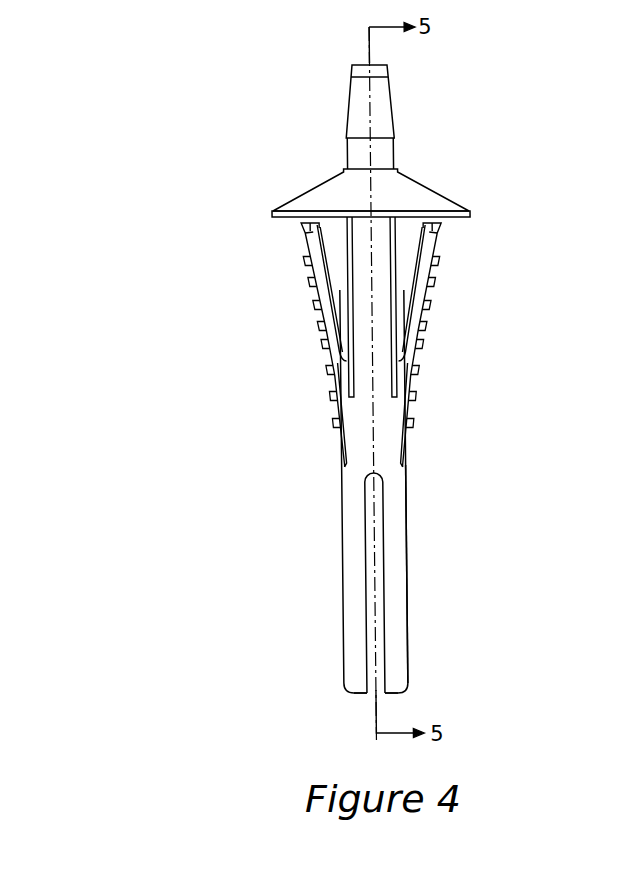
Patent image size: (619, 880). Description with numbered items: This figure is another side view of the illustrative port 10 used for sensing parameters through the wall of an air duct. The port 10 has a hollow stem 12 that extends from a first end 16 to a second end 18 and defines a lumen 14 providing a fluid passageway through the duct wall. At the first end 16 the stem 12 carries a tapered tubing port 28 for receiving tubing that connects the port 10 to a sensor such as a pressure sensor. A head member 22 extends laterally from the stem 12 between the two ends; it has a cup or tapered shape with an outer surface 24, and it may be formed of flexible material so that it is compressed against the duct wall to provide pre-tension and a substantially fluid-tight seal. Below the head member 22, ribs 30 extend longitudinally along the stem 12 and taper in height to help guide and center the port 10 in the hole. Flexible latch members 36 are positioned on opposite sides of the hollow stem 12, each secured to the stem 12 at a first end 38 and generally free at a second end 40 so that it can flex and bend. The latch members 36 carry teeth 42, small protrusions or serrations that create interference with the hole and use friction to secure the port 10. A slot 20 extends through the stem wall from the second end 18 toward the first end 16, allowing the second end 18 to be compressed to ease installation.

The port 10 is at (112, 79).
The hollow stem 12 is at (357, 528).
The lumen 14 is at (372, 691).
The first end 16 is at (441, 101).
The second end 18 is at (441, 665).
The slot 20 is at (383, 580).
The head member 22 is at (282, 208).
The outer surface 24 is at (418, 190).
The tubing port 28 is at (352, 70).
The ribs 30 is at (340, 290).
The latch members 36 is at (322, 330).
The first end of latch member 38 is at (340, 463).
The second end of latch member 40 is at (302, 230).
The teeth 42 is at (307, 262).